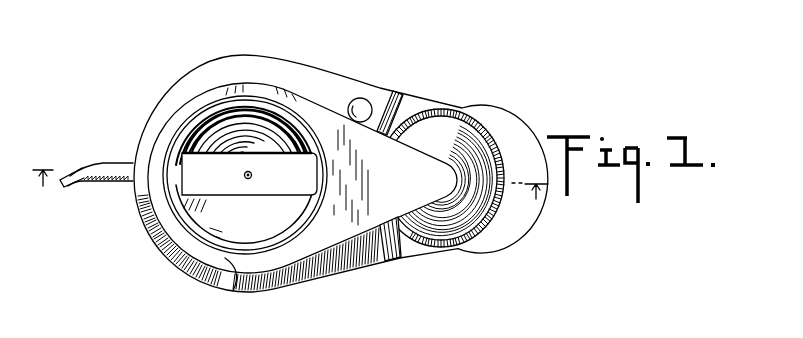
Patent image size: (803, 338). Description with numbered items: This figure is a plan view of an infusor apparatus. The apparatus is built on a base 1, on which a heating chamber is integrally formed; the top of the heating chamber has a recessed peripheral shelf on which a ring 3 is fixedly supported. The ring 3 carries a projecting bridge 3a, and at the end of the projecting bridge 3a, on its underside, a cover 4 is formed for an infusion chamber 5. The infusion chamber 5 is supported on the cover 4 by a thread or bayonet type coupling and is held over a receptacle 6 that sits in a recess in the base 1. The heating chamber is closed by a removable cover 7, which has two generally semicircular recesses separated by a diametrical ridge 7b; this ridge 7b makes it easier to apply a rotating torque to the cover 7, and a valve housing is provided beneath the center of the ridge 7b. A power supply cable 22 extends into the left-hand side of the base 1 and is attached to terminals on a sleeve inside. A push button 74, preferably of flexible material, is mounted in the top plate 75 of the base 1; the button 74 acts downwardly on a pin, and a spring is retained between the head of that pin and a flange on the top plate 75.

The base 1 is at (328, 268).
The ring 3 is at (230, 262).
The projecting bridge 3a is at (428, 165).
The cover 4 is at (468, 155).
The infusion chamber 5 is at (290, 197).
The receptacle 6 is at (468, 238).
The removable cover 7 is at (246, 125).
The diametrical ridge 7b is at (203, 160).
The power supply cable 22 is at (98, 181).
The push button 74 is at (360, 104).
The top plate 75 is at (320, 82).